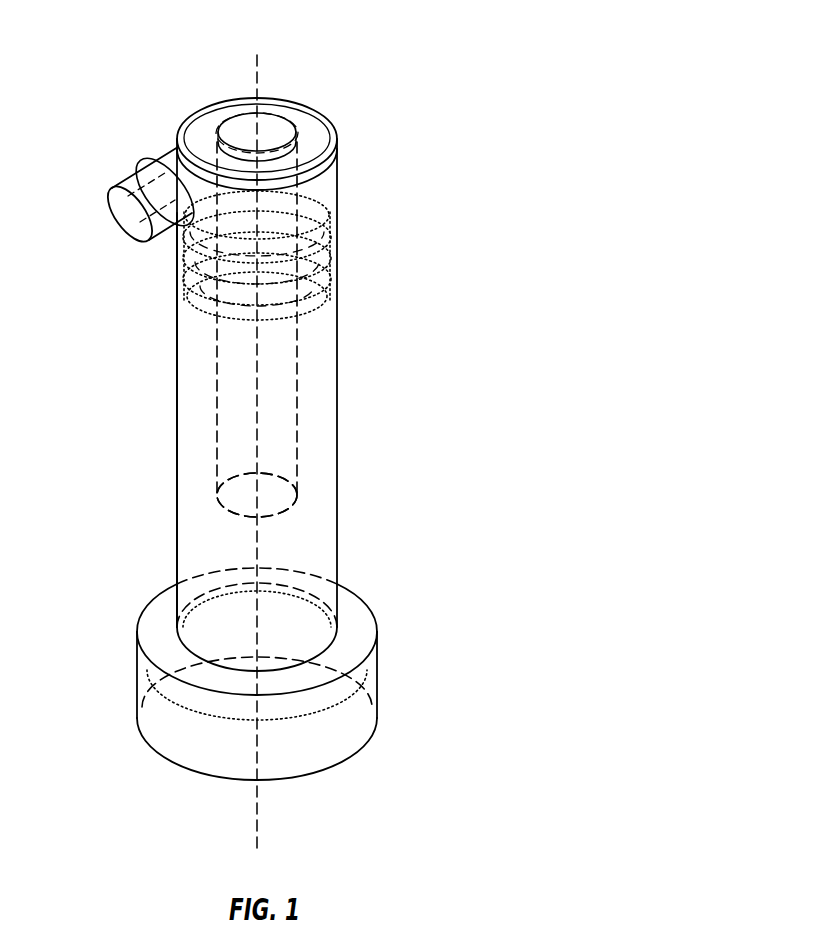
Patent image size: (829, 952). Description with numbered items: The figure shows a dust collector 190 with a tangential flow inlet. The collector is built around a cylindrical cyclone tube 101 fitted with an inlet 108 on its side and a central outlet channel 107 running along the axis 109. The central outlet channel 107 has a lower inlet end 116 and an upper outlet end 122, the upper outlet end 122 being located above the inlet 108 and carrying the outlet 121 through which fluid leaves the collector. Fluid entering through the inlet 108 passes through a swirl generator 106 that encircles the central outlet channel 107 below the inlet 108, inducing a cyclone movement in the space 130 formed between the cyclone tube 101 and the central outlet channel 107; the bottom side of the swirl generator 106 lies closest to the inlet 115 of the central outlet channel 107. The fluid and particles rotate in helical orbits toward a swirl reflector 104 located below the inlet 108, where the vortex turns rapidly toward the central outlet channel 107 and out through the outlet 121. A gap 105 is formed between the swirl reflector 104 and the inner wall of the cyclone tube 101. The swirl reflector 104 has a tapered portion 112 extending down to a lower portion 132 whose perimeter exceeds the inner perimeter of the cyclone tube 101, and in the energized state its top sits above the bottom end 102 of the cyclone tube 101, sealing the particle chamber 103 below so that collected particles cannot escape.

The dust collector 190 is at (378, 38).
The cyclone tube 101 is at (338, 385).
The bottom end of the cyclone tube 102 is at (197, 660).
The particle chamber 103 is at (360, 726).
The swirl reflector 104 is at (207, 627).
The gap 105 is at (330, 607).
The swirl generator 106 is at (320, 290).
The central outlet channel 107 is at (300, 350).
The inlet 108 is at (122, 207).
The axis 109 is at (262, 822).
The tapered portion 112 is at (347, 647).
The inlet of the central outlet channel 115 is at (277, 492).
The lower inlet end 116 is at (224, 508).
The outlet 121 is at (238, 135).
The upper outlet end 122 is at (307, 112).
The space 130 is at (182, 400).
The lower portion of the swirl reflector 132 is at (290, 721).